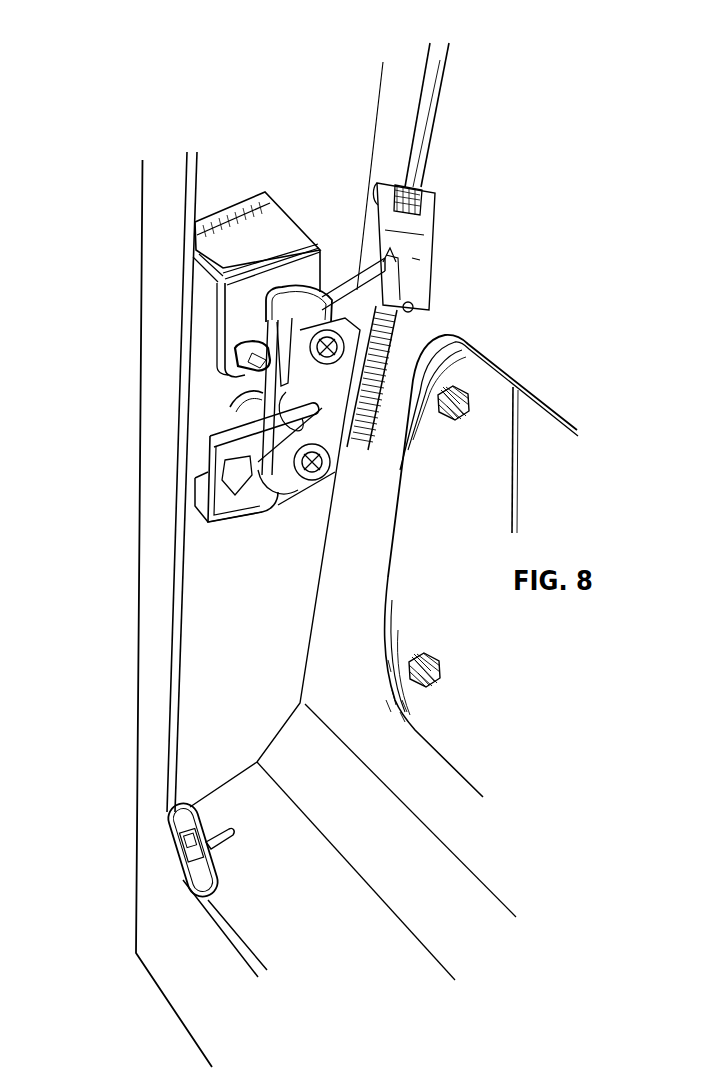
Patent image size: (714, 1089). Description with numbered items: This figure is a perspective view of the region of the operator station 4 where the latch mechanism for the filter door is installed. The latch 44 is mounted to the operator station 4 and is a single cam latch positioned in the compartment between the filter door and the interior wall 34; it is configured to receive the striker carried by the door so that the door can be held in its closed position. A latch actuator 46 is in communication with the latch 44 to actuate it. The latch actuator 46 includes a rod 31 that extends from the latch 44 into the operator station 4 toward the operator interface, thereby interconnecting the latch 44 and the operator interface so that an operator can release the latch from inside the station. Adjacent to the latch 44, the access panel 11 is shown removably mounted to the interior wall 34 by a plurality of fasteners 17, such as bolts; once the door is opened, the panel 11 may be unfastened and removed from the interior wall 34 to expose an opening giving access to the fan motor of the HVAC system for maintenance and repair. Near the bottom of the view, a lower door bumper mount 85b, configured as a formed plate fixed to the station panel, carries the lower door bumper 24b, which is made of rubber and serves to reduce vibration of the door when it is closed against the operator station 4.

The operator station 4 is at (126, 221).
The access panel 11 is at (465, 514).
The fasteners 17 is at (451, 421).
The lower door bumper 24b is at (173, 850).
The rod 31 is at (443, 108).
The interior wall 34 is at (358, 674).
The latch 44 is at (286, 504).
The latch actuator 46 is at (393, 58).
The lower door bumper mount 85b is at (170, 822).